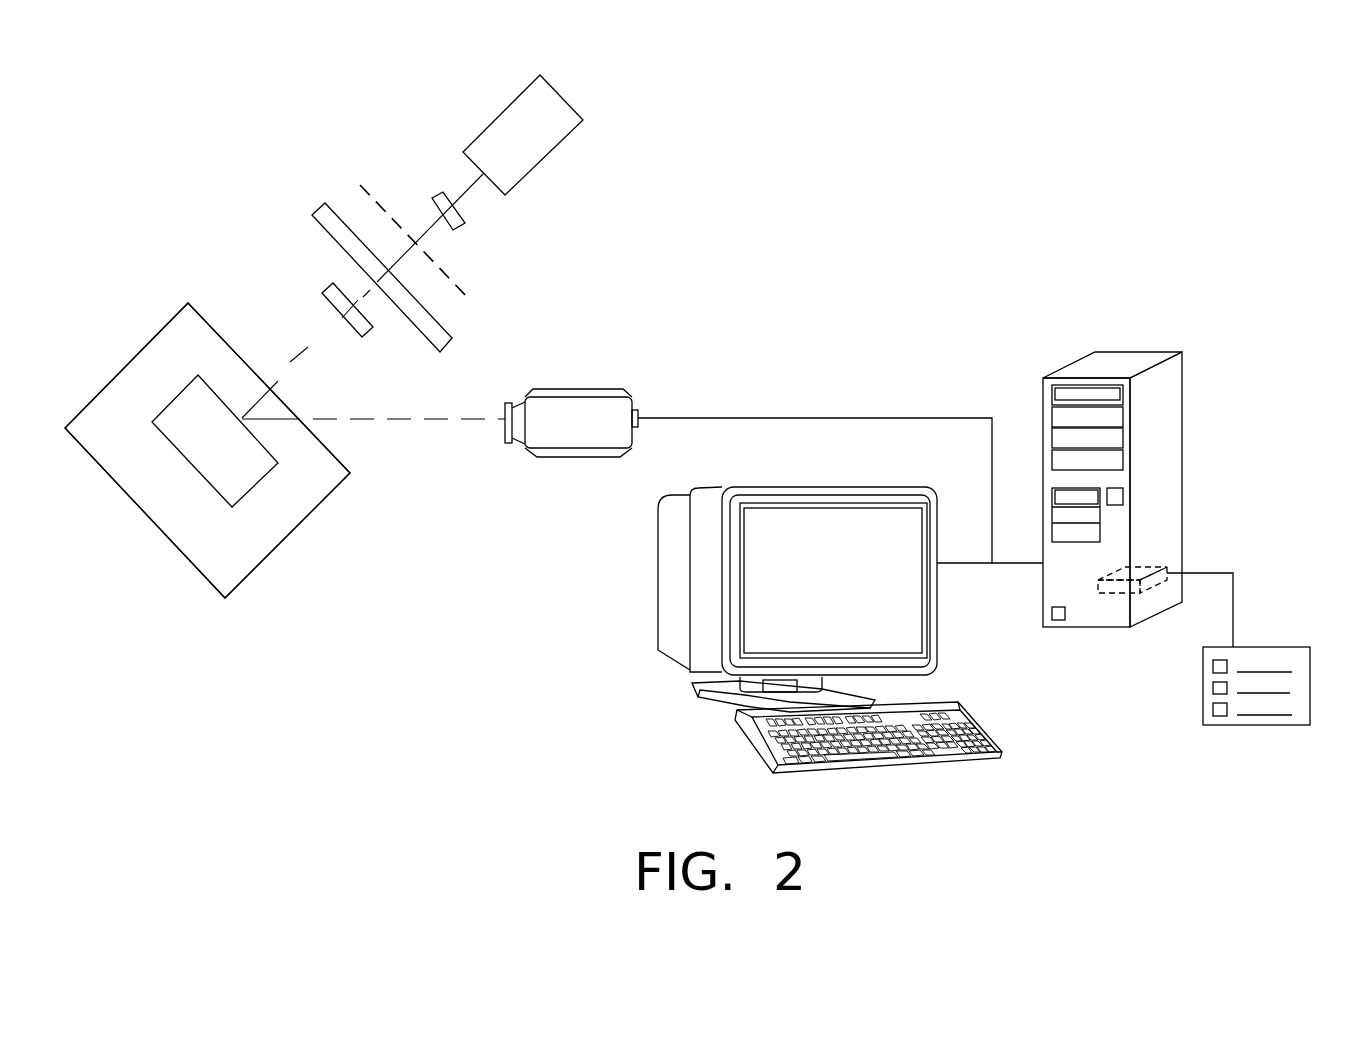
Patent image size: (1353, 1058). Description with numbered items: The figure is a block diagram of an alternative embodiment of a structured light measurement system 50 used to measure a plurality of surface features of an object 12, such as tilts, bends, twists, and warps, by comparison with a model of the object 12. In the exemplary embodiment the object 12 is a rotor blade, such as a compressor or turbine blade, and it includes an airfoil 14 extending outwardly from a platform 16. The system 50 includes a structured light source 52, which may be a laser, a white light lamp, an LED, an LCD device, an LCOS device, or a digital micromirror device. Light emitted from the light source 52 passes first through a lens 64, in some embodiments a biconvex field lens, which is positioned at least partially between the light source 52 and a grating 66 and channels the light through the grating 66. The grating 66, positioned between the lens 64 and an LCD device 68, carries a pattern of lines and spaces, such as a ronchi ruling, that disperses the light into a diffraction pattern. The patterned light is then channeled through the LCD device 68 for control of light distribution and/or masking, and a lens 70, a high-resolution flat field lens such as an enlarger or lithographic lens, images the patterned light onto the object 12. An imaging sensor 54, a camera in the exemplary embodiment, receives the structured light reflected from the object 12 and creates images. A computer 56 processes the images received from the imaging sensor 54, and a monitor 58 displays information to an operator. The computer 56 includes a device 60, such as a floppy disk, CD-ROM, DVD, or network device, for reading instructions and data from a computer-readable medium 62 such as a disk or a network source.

The object 12 is at (168, 279).
The airfoil 14 is at (248, 470).
The platform 16 is at (242, 562).
The structured light measurement system 50 is at (726, 117).
The structured light source 52 is at (513, 100).
The imaging sensor 54 is at (577, 389).
The computer 56 is at (1072, 358).
The monitor 58 is at (657, 577).
The device 60 is at (1116, 596).
The computer-readable medium 62 is at (1275, 647).
The lens 64 is at (460, 225).
The grating 66 is at (365, 190).
The liquid crystal display (LCD) device 68 is at (322, 200).
The lens 70 is at (343, 283).